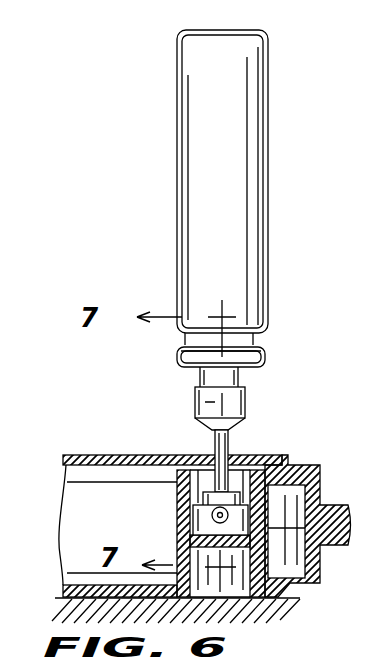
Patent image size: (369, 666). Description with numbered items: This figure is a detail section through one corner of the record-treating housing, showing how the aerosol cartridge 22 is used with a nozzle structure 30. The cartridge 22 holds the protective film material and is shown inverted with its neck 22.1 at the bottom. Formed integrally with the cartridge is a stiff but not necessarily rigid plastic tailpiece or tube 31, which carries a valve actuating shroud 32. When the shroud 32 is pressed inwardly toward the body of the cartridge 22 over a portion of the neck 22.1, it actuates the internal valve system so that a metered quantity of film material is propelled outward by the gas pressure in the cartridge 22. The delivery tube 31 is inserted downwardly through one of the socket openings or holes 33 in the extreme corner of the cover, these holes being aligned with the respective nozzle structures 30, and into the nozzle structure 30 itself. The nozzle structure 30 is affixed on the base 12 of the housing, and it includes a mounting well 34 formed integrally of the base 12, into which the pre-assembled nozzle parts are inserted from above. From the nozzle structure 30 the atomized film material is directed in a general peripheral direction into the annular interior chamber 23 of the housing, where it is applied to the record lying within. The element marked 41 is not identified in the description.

The aerosol cartridge 22 is at (205, 146).
The neck 22.1 is at (200, 380).
The valve actuating shroud 32 is at (207, 402).
The tailpiece or tube 31 is at (223, 444).
The interior chamber 23 is at (148, 485).
The nozzle structure 30 is at (175, 522).
The mounting well 34 is at (262, 533).
The base 12 is at (305, 600).
The socket openings or holes 33 is at (362, 370).
The unknown 41 is at (363, 418).